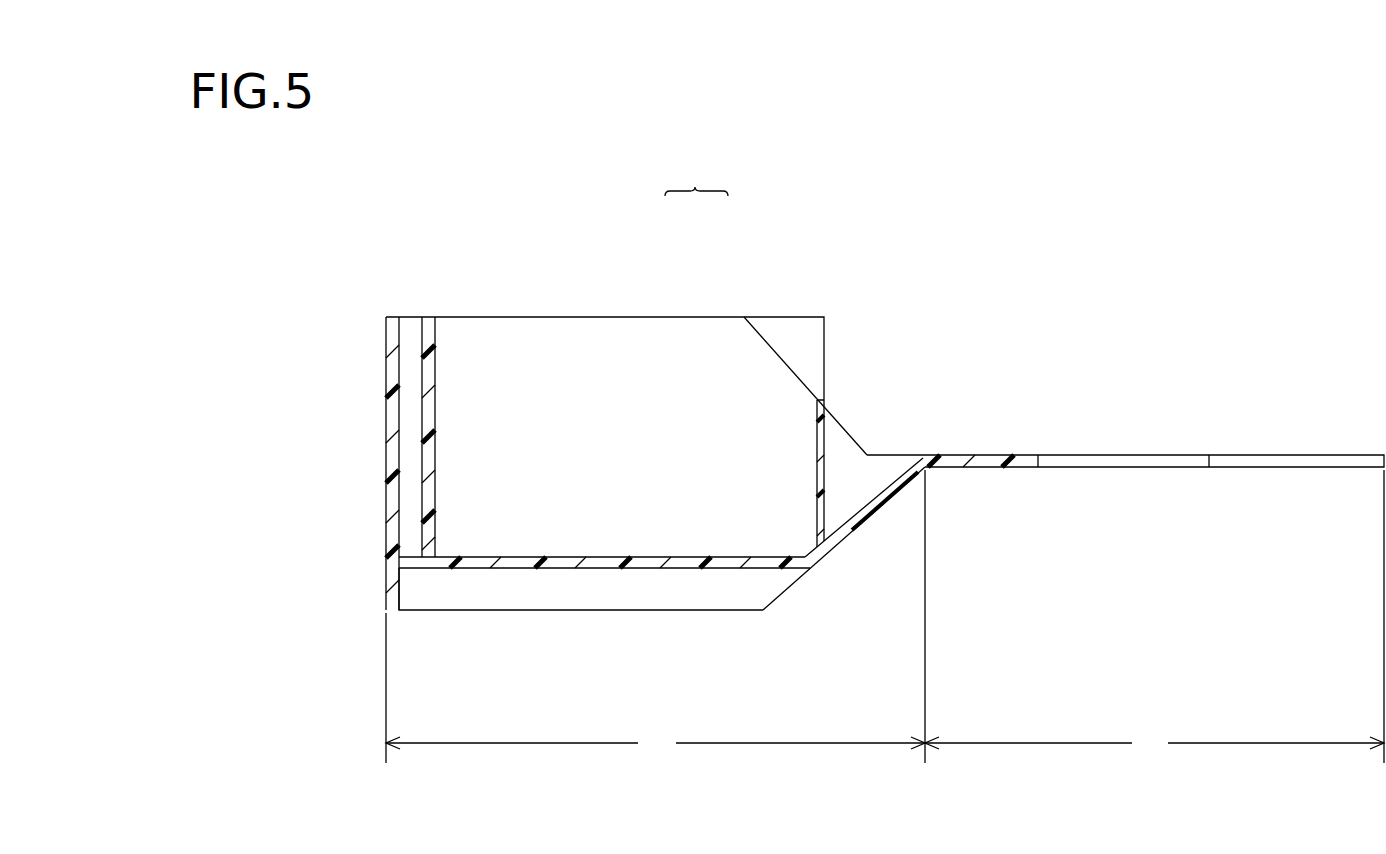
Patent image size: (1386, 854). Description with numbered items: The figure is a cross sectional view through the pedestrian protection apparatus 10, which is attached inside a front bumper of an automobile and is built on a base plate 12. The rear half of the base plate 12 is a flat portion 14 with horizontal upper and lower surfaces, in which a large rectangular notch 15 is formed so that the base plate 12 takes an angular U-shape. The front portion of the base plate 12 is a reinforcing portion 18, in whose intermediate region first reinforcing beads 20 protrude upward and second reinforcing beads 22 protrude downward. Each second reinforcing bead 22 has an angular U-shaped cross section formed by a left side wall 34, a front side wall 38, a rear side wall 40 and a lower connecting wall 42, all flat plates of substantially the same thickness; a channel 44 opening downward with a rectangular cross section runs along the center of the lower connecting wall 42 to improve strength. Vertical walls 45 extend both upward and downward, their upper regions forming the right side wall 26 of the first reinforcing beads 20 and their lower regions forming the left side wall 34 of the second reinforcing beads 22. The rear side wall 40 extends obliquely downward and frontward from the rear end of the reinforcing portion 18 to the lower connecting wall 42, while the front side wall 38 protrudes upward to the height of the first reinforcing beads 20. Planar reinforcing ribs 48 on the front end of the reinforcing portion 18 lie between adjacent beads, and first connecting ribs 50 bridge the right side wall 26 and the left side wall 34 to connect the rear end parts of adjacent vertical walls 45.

The pedestrian protection apparatus 10 is at (910, 300).
The base plate 12 is at (1290, 443).
The flat portion 14 is at (1154, 616).
The rectangular notch 15 is at (1157, 462).
The reinforcing portion 18 is at (655, 688).
The first reinforcing beads 20 is at (539, 305).
The second reinforcing beads 22 is at (656, 622).
The right side wall 26 is at (655, 369).
The left side wall 34 is at (655, 533).
The front side wall 38 is at (391, 481).
The rear side wall 40 is at (856, 520).
The lower connecting wall 42 is at (495, 560).
The channel 44 is at (610, 570).
The vertical walls 45 is at (684, 348).
The reinforcing ribs 48 is at (428, 407).
The first connecting ribs 50 is at (818, 476).